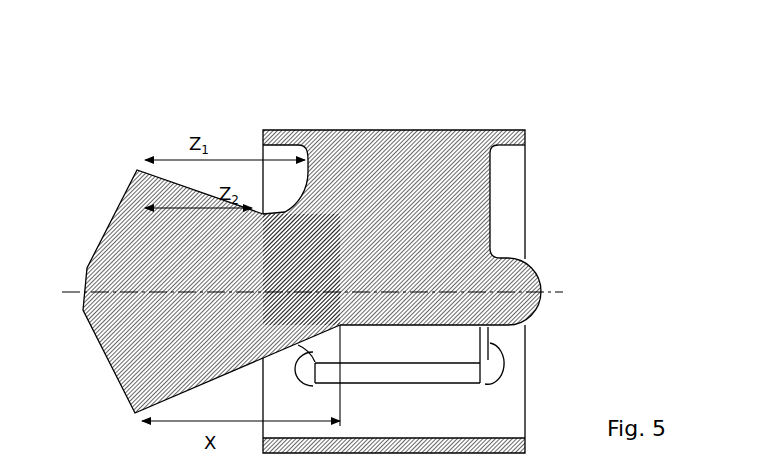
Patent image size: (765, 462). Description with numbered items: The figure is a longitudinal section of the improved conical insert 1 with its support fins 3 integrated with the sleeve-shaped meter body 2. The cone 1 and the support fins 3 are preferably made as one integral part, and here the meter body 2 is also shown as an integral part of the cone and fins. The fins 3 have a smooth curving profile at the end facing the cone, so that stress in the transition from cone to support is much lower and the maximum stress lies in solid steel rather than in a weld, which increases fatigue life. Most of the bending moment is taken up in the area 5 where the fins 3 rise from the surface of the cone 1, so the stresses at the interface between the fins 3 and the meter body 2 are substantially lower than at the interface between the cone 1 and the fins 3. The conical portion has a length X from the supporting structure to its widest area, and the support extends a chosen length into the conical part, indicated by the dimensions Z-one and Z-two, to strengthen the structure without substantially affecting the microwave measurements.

The conical insert 1 is at (109, 257).
The meter body 2 is at (398, 142).
The support fins 3 is at (480, 223).
The area where the fins raise from the cone surface 5 is at (283, 185).